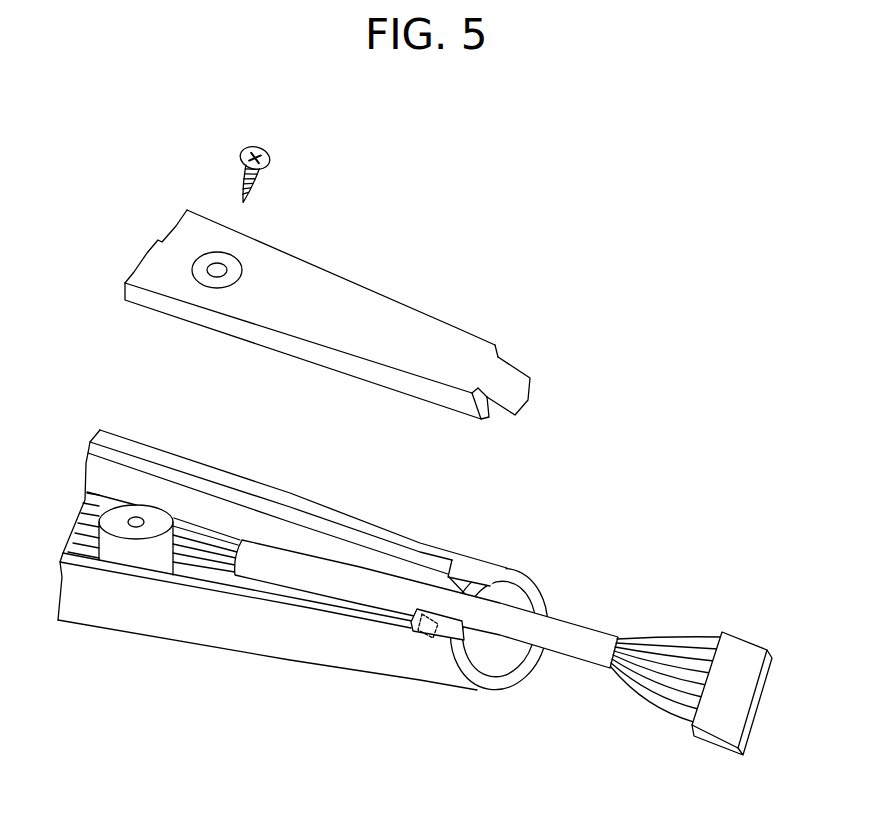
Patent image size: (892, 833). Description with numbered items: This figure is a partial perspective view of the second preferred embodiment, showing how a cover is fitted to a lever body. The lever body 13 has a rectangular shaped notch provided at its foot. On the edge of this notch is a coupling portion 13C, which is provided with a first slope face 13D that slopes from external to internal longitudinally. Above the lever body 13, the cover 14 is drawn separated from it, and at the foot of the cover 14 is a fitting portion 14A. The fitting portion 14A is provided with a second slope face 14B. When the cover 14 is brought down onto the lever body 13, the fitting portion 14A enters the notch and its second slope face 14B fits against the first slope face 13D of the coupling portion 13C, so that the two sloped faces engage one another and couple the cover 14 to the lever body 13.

The lever body 13 is at (222, 618).
The coupling portion 13C is at (412, 622).
The first slope face 13D is at (422, 637).
The cover 14 is at (317, 285).
The fitting portion 14A is at (490, 350).
The second slope face 14B is at (503, 362).